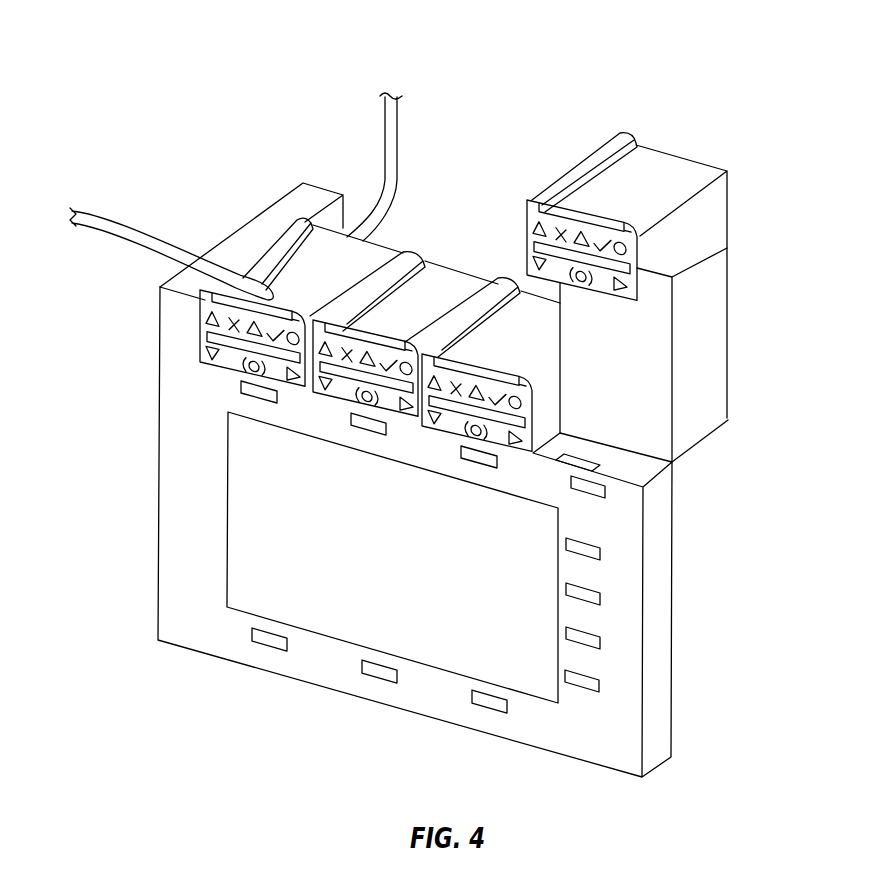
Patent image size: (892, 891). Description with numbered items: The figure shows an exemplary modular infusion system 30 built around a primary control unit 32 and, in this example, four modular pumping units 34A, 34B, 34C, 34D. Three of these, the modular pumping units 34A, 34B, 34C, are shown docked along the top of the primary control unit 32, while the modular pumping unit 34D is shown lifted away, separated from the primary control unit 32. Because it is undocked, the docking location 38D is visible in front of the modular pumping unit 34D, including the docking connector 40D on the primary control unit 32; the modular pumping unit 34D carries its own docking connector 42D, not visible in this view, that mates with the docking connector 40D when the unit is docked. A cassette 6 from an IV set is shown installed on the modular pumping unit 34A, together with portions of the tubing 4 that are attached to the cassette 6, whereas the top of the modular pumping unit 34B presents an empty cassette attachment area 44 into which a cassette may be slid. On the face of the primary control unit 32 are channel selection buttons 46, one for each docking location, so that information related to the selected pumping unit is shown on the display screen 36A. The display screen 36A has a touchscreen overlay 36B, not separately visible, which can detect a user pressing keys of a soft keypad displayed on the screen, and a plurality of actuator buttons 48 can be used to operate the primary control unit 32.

The modular infusion system 30 is at (440, 73).
The tubing 4 is at (108, 217).
The cassette 6 is at (277, 260).
The primary control unit 32 is at (158, 395).
The modular pumping unit 34A is at (227, 370).
The modular pumping unit 34B is at (340, 402).
The modular pumping unit 34C is at (453, 433).
The modular pumping unit 34D is at (712, 210).
The display screen 36A is at (285, 530).
The touchscreen overlay 36B is at (285, 582).
The docking location 38D is at (648, 483).
The docking connector 40D is at (585, 450).
The docking connector 42D is at (593, 305).
The cassette attachment area 44 is at (450, 273).
The channel selection buttons 46 is at (605, 492).
The actuator buttons 48 is at (380, 674).